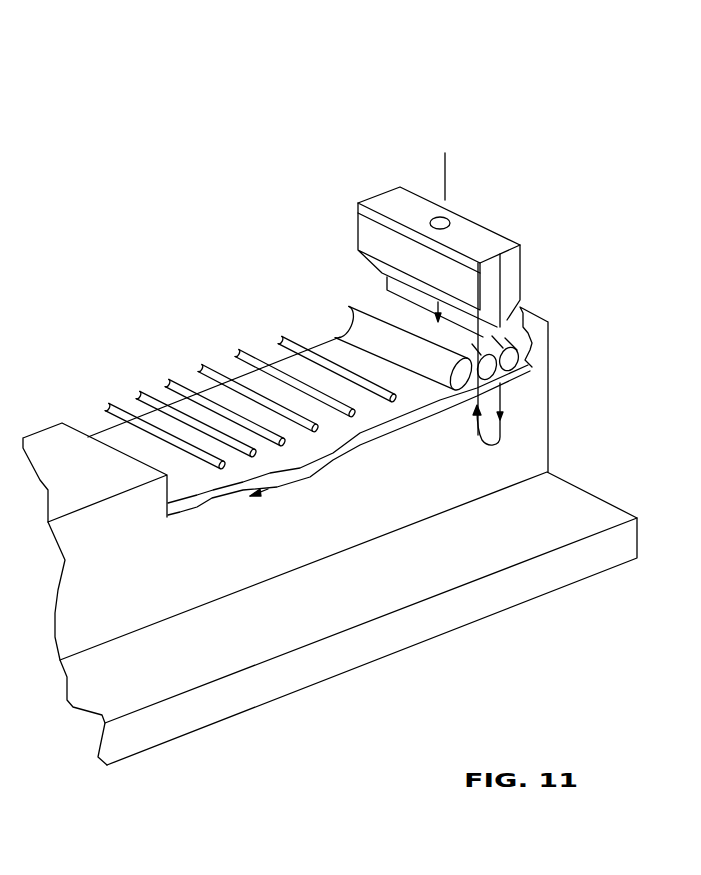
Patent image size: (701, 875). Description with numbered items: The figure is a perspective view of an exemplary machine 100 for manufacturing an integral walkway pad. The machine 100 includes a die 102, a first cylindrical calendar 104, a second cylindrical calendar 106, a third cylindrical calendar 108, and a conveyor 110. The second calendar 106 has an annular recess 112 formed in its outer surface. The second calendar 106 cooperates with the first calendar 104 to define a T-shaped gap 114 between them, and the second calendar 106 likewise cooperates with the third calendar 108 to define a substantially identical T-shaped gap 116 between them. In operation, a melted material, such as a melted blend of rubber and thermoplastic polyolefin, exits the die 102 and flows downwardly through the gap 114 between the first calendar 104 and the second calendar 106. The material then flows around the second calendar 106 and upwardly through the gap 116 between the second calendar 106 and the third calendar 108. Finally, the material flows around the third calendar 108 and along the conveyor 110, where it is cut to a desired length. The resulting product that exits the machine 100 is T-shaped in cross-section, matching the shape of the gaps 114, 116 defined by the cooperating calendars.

The machine 100 is at (497, 138).
The die 102 is at (513, 272).
The first cylindrical calendar 104 is at (512, 360).
The second cylindrical calendar 106 is at (505, 390).
The third cylindrical calendar 108 is at (342, 320).
The conveyor 110 is at (167, 360).
The annular recess 112 is at (377, 303).
The T-shaped gap 114 is at (521, 283).
The T-shaped gap 116 is at (479, 435).